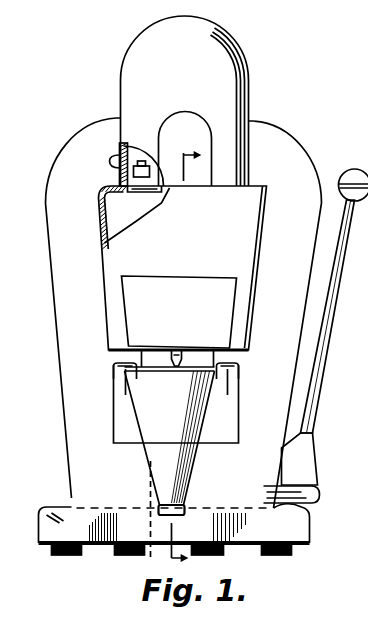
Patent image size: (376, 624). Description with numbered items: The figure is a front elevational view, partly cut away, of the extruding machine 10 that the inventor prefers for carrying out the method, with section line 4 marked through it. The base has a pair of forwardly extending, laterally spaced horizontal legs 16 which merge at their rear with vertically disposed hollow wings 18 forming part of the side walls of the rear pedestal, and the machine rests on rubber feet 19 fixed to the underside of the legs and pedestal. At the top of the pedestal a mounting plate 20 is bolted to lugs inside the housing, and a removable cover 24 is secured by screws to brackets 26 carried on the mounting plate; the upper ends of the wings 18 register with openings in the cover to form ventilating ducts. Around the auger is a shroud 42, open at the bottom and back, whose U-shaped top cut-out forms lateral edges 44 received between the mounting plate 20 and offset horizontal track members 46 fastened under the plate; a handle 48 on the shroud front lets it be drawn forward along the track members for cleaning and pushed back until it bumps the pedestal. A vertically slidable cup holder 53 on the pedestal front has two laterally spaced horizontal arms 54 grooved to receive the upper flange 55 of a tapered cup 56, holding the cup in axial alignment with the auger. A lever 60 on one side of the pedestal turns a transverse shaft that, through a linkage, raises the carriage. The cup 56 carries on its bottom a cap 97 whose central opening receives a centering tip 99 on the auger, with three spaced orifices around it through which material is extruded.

The machine 10 is at (150, 458).
The section line 4- 4 is at (175, 353).
The horizontal legs 16 is at (58, 504).
The hollow wings 18 is at (72, 406).
The rubber feet 19 is at (64, 548).
The mounting plate 20 is at (172, 187).
The cover 24 is at (225, 47).
The brackets 26 is at (133, 142).
The shroud 42 is at (112, 262).
The lateral edges 44 is at (112, 217).
The track members 46 is at (143, 190).
The handle 48 is at (208, 287).
The cup holder 53 is at (228, 432).
The horizontal arms 54 is at (113, 378).
The upper flange 55 is at (150, 374).
The cup 56 is at (195, 472).
The lever 60 is at (344, 236).
The cap 97 is at (190, 504).
The centering tip 99 is at (183, 359).